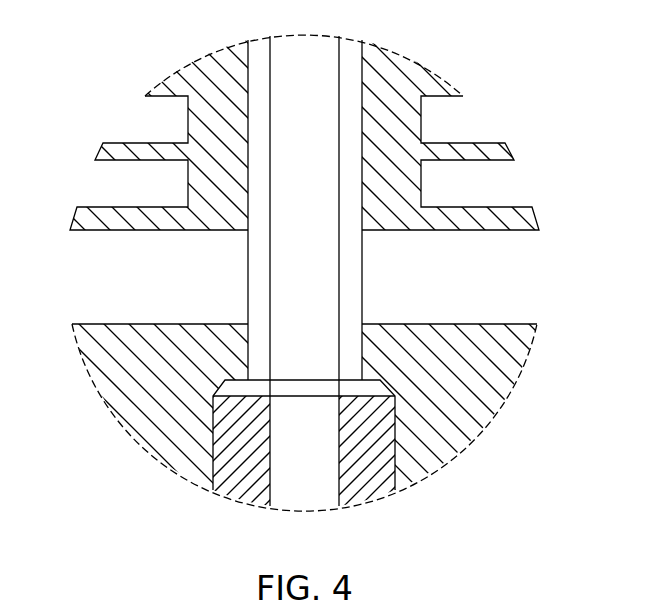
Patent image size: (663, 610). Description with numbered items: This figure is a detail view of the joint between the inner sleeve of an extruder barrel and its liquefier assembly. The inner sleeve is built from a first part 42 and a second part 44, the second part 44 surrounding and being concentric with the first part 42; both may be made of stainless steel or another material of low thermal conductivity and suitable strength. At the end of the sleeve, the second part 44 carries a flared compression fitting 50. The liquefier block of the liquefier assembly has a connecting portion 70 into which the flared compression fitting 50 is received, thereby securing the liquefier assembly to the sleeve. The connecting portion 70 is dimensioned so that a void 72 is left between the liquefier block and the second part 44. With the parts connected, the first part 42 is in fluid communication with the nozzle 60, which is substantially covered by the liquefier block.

The first part 42 is at (320, 261).
The second part 44 is at (340, 237).
The flared compression fitting 50 is at (205, 386).
The nozzle 60 is at (297, 482).
The connecting portion 70 is at (236, 336).
The void 72 is at (370, 340).